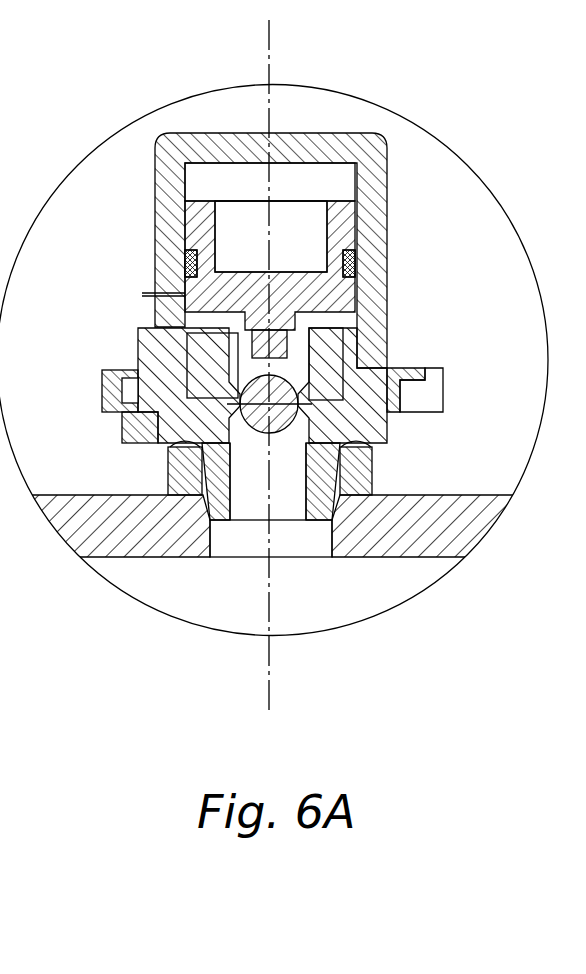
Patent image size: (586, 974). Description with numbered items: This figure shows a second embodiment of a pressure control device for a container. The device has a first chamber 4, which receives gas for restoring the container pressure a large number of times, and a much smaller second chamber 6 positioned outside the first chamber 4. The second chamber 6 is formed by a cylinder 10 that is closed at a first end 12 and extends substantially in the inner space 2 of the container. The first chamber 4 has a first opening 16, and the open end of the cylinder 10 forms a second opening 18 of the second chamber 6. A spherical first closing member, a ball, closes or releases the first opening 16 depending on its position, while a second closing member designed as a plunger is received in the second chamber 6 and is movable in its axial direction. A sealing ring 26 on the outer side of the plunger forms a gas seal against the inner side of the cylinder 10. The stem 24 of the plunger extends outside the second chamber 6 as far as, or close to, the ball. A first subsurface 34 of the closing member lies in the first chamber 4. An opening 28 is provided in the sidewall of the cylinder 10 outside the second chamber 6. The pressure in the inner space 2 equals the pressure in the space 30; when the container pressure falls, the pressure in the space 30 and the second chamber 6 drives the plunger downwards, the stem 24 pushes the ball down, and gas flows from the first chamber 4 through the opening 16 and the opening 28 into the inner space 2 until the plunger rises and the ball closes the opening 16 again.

The inner space of the container 2 is at (102, 282).
The first chamber 4 is at (308, 606).
The second chamber 6 is at (303, 247).
The cylinder 10 is at (383, 320).
The first end 12 is at (310, 150).
The first opening 16 is at (248, 447).
The second opening 18 is at (383, 286).
The stem 24 is at (208, 335).
The sealing ring 26 is at (187, 262).
The opening 28 is at (185, 295).
The space 30 is at (338, 318).
The first subsurface 34 is at (423, 507).